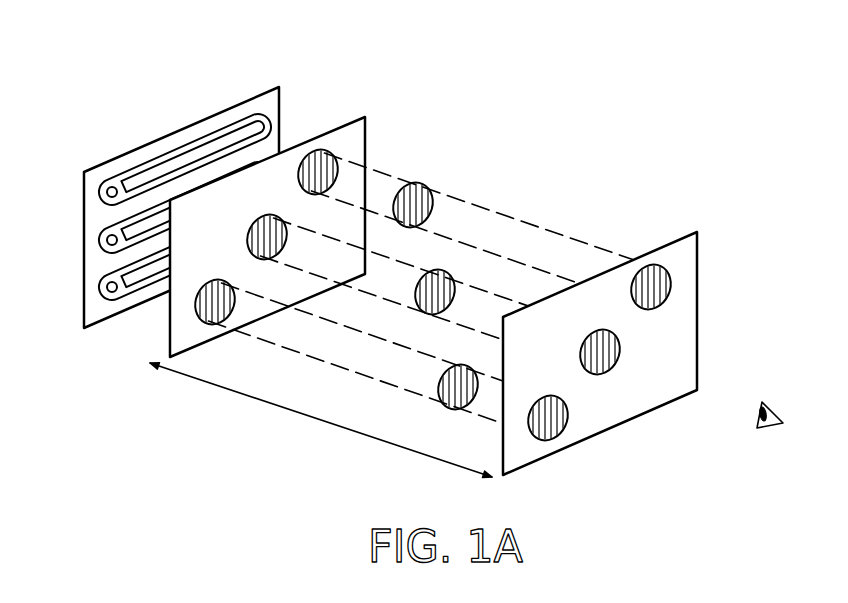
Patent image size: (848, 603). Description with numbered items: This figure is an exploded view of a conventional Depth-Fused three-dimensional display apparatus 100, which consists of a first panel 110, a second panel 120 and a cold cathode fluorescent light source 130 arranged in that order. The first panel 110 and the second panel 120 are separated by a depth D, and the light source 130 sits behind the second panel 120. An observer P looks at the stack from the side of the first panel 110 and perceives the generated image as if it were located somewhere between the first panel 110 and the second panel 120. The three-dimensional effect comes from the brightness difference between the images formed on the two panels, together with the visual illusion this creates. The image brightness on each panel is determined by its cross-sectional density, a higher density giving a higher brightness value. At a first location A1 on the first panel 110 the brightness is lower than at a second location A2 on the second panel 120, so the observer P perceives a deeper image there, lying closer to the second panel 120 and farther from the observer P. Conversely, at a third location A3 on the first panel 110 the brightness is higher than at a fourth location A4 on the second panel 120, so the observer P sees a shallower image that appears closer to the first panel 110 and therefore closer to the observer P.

The 3D display apparatus 100 is at (800, 570).
The first panel 110 is at (698, 258).
The second panel 120 is at (347, 124).
The cold cathode fluorescent light source 130 is at (258, 94).
The first location A1 is at (667, 268).
The second location A2 is at (329, 150).
The third location A3 is at (568, 424).
The fourth location A4 is at (186, 302).
The depth D is at (321, 420).
The observer P is at (768, 430).